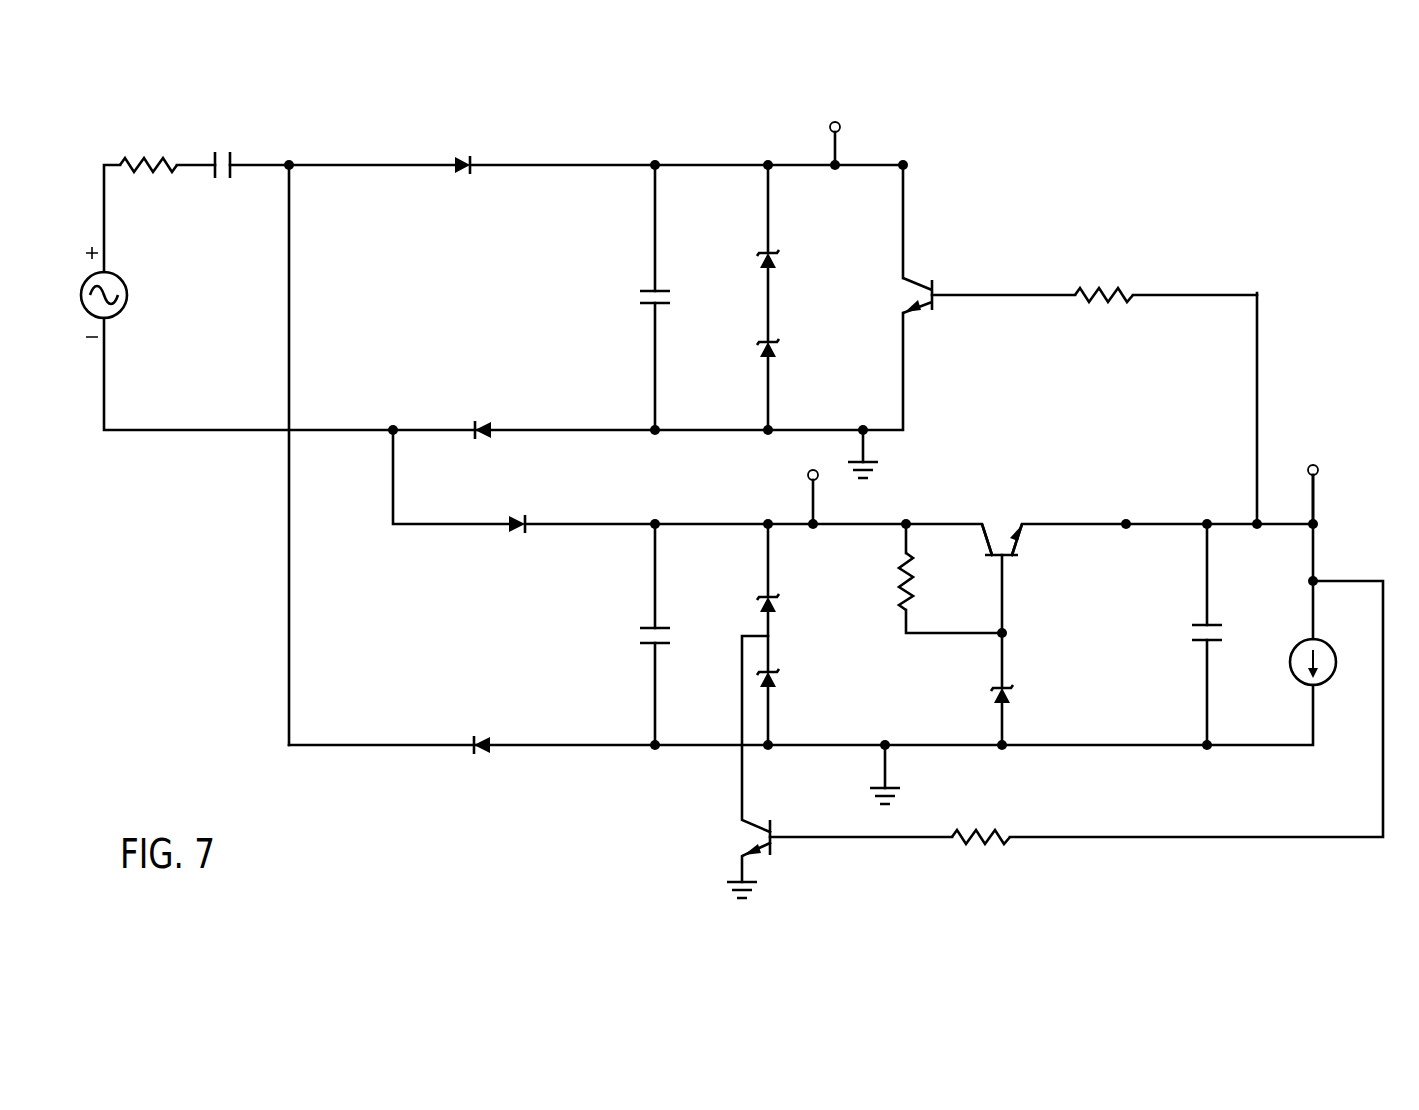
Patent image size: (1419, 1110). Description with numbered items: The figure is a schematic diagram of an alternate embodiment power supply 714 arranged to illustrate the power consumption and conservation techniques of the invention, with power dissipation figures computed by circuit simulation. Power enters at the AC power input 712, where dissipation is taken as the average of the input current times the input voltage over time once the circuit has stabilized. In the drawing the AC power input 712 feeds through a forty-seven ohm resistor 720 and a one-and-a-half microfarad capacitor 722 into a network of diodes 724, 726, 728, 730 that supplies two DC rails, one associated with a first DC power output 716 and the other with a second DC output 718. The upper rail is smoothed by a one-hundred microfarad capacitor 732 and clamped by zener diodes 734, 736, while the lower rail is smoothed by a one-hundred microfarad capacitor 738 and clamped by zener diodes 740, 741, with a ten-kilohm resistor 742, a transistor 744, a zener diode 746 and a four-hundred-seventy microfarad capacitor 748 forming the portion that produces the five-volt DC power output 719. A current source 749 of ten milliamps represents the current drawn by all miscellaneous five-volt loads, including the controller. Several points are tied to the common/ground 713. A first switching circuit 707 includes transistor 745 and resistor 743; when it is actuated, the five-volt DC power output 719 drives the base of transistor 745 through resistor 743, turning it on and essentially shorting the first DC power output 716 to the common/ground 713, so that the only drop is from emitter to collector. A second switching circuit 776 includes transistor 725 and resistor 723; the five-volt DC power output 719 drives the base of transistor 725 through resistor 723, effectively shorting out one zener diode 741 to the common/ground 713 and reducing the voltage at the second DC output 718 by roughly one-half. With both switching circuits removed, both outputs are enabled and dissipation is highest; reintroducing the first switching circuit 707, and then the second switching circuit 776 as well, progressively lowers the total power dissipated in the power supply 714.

The first switching circuit 707 is at (1045, 338).
The AC power input 712 is at (128, 295).
The common/ground 713 is at (880, 477).
The power supply 714 is at (235, 640).
The first DC power output 716 is at (841, 125).
The second DC output 718 is at (819, 477).
The 5 VDC power output 719 is at (1318, 518).
The 47 ohm resistor 720 is at (150, 172).
The 1.5 uF capacitor 722 is at (232, 172).
The resistor 723 is at (998, 830).
The diode 724 is at (485, 436).
The transistor 725 is at (755, 827).
The diode 726 is at (460, 172).
The diode 728 is at (476, 752).
The diode 730 is at (505, 530).
The 100 uF capacitor 732 is at (648, 302).
The zener diode 734 is at (775, 262).
The zener diode 736 is at (776, 350).
The 100 uF capacitor 738 is at (660, 627).
The zener diode 740 is at (776, 610).
The zener diode 741 is at (776, 684).
The 10K resistor 742 is at (918, 600).
The resistor 743 is at (1108, 300).
The transistor 744 is at (1012, 548).
The transistor 745 is at (936, 302).
The zener diode 746 is at (1010, 697).
The 470 uF capacitor 748 is at (1212, 624).
The current source 749 is at (1332, 678).
The second switching circuit 776 is at (660, 828).